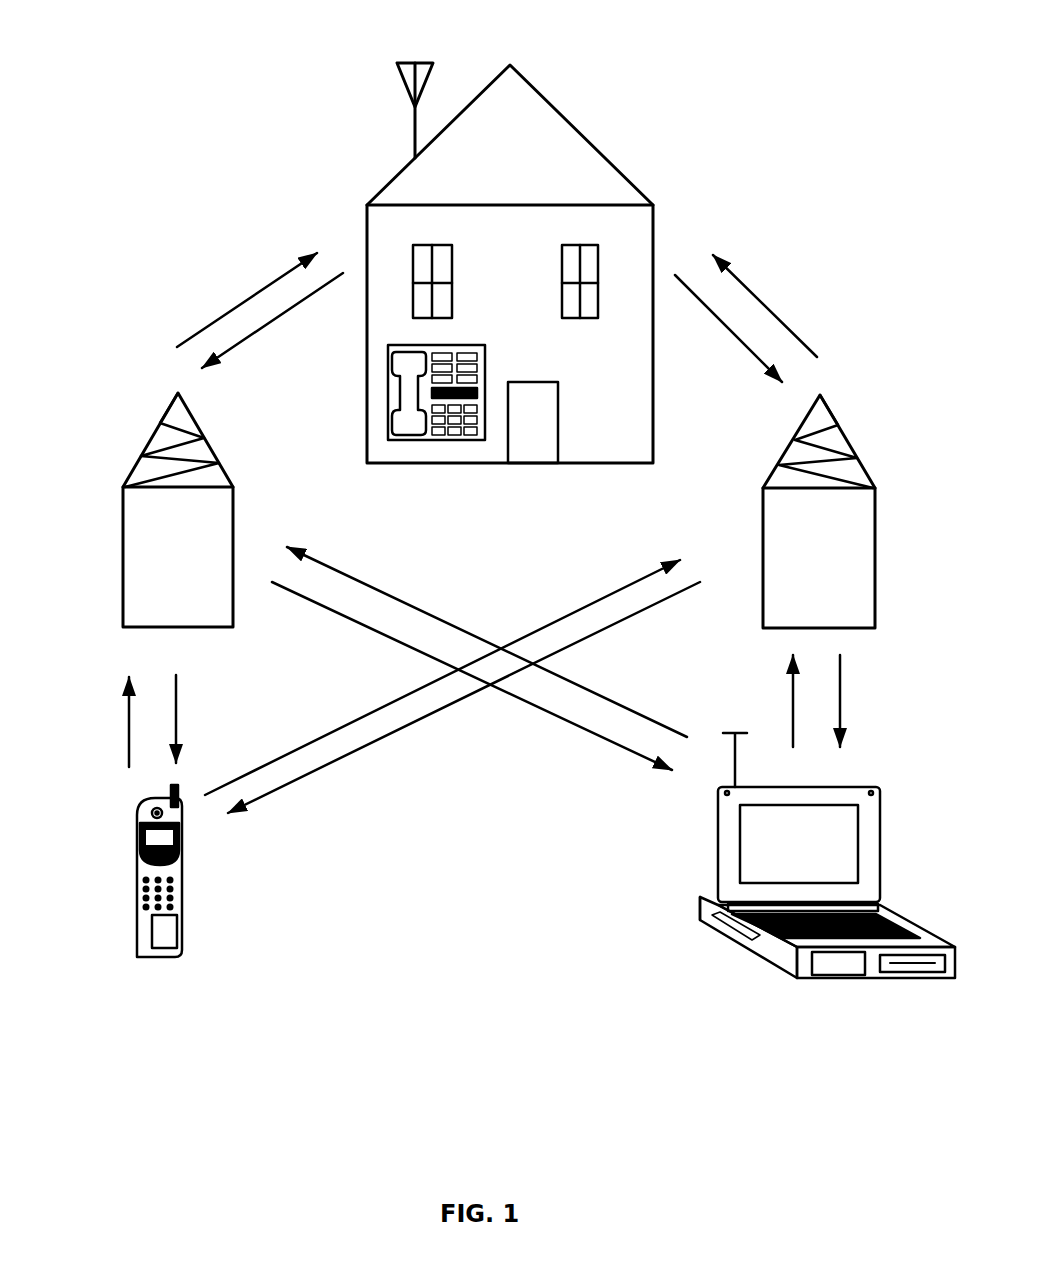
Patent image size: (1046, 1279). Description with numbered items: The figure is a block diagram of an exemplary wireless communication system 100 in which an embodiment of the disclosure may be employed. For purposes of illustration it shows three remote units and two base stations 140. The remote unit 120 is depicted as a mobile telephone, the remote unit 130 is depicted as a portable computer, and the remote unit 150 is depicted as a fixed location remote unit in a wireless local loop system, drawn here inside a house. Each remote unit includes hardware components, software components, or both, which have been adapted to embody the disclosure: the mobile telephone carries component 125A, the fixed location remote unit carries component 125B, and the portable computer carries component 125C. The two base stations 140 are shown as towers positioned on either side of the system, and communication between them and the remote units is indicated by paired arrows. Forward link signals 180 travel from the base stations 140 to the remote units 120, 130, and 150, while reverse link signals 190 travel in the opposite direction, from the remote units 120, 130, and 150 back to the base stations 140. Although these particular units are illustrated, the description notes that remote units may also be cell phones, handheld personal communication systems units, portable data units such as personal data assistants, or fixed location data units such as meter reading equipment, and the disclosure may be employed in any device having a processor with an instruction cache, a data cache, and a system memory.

The wireless communication system 100 is at (196, 109).
The remote unit 120 is at (137, 860).
The component 125A is at (165, 935).
The component 125B is at (440, 403).
The component 125C is at (838, 963).
The remote unit 130 is at (843, 793).
The base station 140 is at (160, 430).
The remote unit 150 is at (388, 415).
The forward link signals 180 is at (255, 293).
The reverse link signals 190 is at (280, 318).